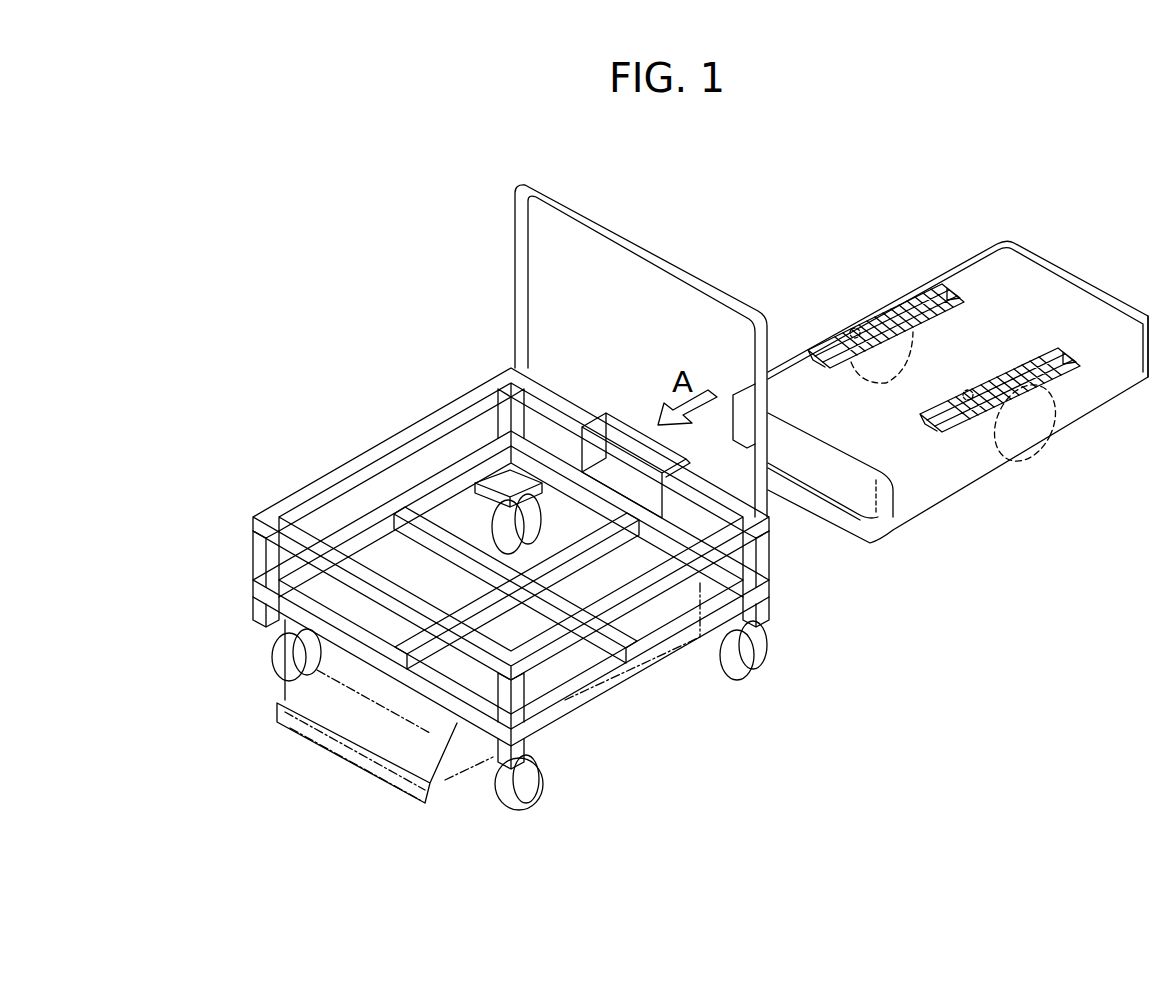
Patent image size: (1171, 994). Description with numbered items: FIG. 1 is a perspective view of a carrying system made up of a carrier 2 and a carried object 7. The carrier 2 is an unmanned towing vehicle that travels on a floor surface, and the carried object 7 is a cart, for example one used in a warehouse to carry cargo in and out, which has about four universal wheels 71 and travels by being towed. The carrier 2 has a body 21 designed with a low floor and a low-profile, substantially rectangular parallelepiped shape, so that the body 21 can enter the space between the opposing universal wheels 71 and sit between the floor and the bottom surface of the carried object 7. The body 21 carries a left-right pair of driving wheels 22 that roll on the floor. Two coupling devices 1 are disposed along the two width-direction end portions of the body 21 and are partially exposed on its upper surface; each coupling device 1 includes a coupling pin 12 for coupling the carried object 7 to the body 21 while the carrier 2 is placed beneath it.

The coupling device 1 is at (838, 332).
The coupling pin 12 is at (853, 326).
The carrier 2 is at (1060, 260).
The body 21 is at (1098, 385).
The driving wheels 22 is at (1025, 457).
The carried object 7 is at (322, 470).
The universal wheels 71 is at (275, 654).